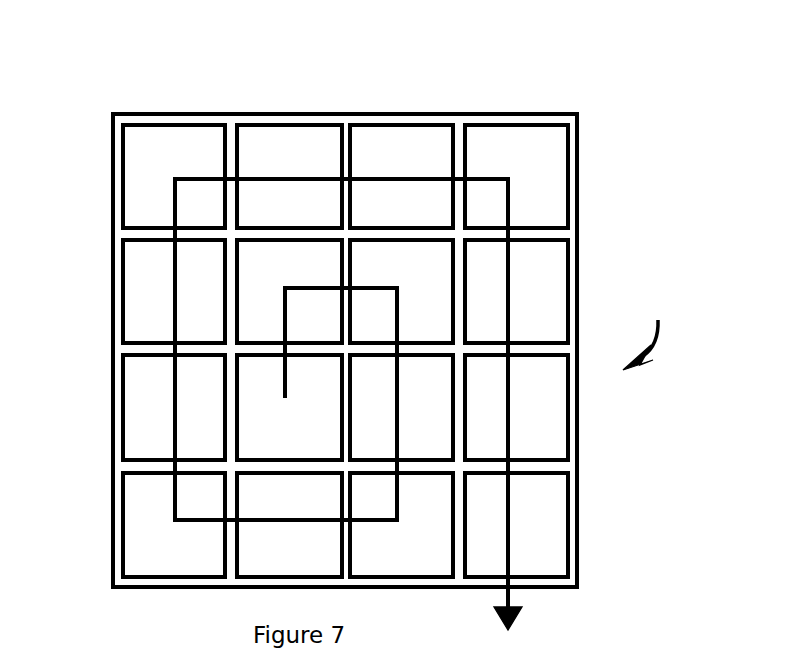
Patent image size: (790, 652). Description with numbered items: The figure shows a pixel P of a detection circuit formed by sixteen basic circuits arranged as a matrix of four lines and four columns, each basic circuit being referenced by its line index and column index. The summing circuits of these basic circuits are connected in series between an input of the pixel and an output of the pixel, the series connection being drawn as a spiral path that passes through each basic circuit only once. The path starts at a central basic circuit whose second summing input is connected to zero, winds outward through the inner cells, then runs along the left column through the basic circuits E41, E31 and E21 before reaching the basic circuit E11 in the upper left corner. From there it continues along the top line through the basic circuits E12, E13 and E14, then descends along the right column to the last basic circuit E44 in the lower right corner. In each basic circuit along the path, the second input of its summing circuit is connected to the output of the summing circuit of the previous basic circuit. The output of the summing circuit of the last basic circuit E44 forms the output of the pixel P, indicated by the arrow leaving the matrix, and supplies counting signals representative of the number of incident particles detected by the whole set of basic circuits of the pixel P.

The basic circuit E11 is at (147, 193).
The basic circuit E12 is at (278, 137).
The basic circuit E13 is at (410, 137).
The basic circuit E14 is at (543, 183).
The basic circuit E21 is at (147, 307).
The basic circuit E31 is at (147, 415).
The basic circuit E41 is at (147, 527).
The basic circuit E44 is at (547, 533).
The pixel P is at (646, 326).